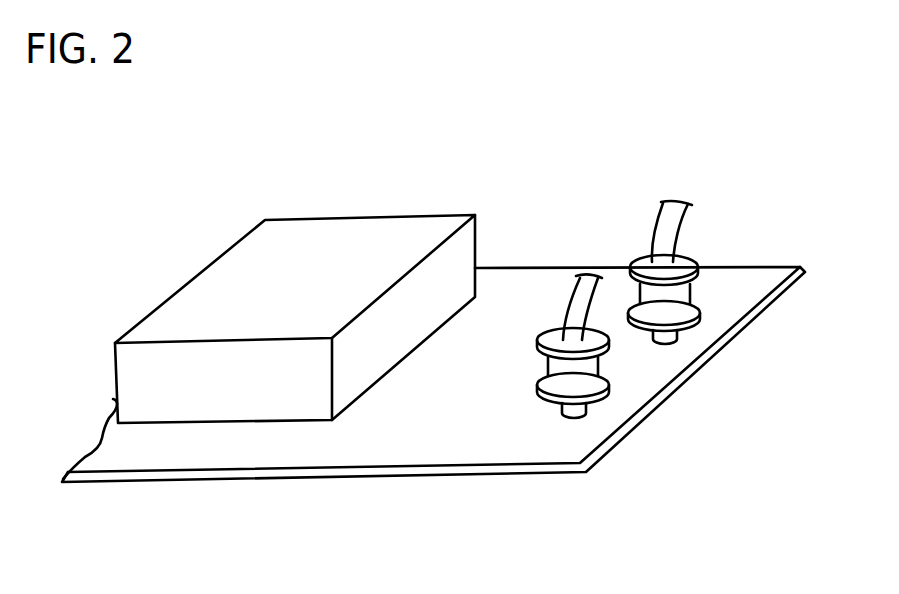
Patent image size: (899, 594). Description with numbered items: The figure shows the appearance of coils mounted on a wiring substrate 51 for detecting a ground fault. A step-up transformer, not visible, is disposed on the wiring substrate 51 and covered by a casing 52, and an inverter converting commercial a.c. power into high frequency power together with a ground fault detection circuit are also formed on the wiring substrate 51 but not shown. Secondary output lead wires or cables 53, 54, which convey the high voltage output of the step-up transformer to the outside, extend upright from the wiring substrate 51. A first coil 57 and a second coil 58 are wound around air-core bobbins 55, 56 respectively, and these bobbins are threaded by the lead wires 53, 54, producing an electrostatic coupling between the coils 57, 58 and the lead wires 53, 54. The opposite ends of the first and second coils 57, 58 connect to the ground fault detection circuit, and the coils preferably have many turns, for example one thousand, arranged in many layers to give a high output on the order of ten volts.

The wiring substrate 51 is at (288, 457).
The casing 52 is at (317, 232).
The secondary output lead wire (cable) 53 is at (654, 233).
The secondary output lead wire (cable) 54 is at (568, 298).
The air-core bobbin 55 is at (700, 320).
The air-core bobbin 56 is at (604, 395).
The first coil 57 is at (735, 270).
The second coil 58 is at (630, 411).